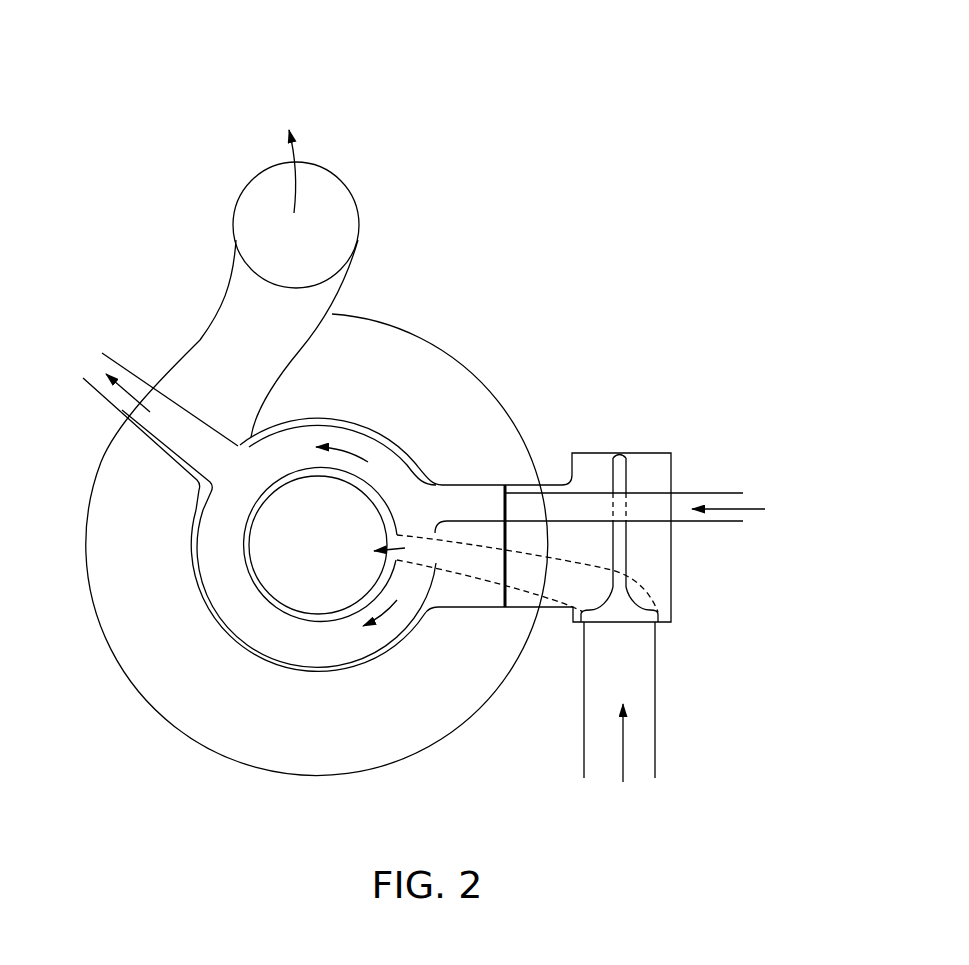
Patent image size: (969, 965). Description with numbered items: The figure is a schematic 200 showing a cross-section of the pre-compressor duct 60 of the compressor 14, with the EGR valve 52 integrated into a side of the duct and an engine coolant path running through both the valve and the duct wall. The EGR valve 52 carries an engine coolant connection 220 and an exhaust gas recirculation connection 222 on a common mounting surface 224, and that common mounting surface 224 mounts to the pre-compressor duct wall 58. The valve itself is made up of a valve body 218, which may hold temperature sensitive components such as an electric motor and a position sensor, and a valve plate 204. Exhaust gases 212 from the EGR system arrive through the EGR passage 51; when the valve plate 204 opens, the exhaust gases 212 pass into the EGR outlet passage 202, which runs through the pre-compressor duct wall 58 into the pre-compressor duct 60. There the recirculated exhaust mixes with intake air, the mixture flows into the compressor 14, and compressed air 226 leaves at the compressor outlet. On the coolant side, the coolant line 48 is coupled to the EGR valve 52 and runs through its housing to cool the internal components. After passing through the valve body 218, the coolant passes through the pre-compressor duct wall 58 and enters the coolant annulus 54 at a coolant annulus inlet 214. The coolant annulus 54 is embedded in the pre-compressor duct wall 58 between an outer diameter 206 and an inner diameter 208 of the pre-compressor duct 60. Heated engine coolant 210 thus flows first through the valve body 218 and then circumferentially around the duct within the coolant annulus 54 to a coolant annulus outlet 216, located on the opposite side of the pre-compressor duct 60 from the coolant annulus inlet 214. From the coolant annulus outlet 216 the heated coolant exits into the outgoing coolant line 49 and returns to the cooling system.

The compressor 14 is at (146, 757).
The coolant line 48 is at (713, 493).
The outgoing coolant line 49 is at (111, 358).
The EGR passage 51 is at (655, 690).
The EGR valve 52 is at (702, 587).
The coolant annulus 54 is at (287, 648).
The pre-compressor duct wall 58 is at (340, 665).
The pre-compressor duct 60 is at (386, 458).
The schematic 200 is at (762, 65).
The EGR outlet passage 202 is at (540, 552).
The valve plate 204 is at (622, 562).
The outer diameter 206 is at (326, 418).
The inner diameter 208 is at (247, 567).
The heated engine coolant 210 is at (751, 509).
The exhaust gases 212 is at (623, 770).
The coolant annulus inlet 214 is at (421, 512).
The coolant annulus outlet 216 is at (232, 457).
The valve body 218 is at (638, 452).
The engine coolant connection 220 is at (508, 508).
The exhaust gas recirculation connection 222 is at (507, 594).
The common mounting surface 224 is at (496, 567).
The compressed air 226 is at (293, 153).